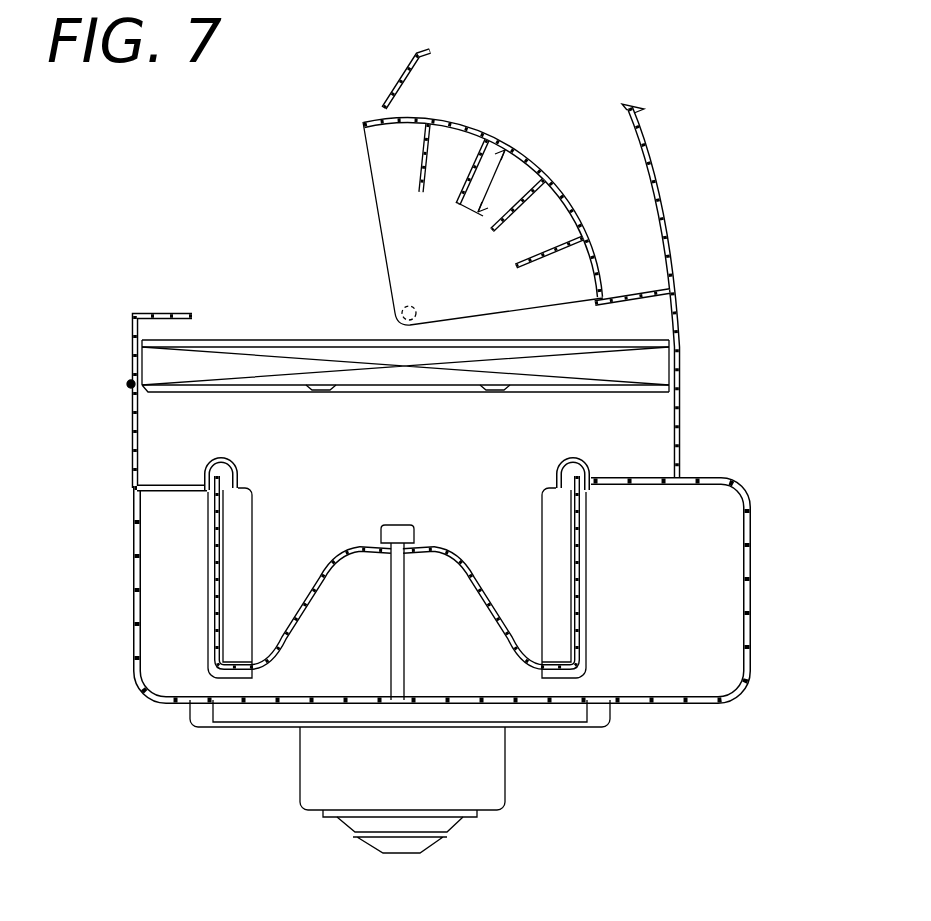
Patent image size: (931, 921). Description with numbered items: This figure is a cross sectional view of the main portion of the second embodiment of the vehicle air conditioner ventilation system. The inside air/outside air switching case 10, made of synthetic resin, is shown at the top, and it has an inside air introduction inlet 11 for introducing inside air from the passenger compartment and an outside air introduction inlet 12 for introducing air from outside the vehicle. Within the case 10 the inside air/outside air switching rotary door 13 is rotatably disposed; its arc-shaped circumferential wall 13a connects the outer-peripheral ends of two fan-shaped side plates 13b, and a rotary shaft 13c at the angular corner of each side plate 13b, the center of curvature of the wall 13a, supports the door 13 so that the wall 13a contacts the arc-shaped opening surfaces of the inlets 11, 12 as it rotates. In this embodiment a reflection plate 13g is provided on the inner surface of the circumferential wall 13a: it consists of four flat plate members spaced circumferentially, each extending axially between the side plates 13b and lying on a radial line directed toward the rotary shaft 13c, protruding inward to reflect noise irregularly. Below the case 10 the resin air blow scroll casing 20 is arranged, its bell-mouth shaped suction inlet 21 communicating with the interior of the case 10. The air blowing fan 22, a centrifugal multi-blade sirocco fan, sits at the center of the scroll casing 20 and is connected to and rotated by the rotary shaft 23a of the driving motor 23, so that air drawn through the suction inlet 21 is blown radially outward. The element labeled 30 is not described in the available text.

The inside air/outside air switching case 10 is at (648, 138).
The inside air introduction inlet 11 is at (272, 152).
The outside air introduction inlet 12 is at (525, 78).
The inside air/outside air switching rotary door 13 is at (457, 120).
The arc-shaped circumferential wall 13a is at (541, 164).
The fan-shaped side plate 13b is at (368, 173).
The rotary shaft 13c is at (402, 313).
The reflection plate 13g is at (417, 193).
The air blow scroll casing 20 is at (733, 497).
The bell-mouth shaped suction inlet 21 is at (282, 483).
The air blowing fan 22 is at (585, 576).
The driving motor 23 is at (488, 787).
The rotary shaft of the driving motor 23a is at (398, 645).
The reflector box 30 is at (655, 367).